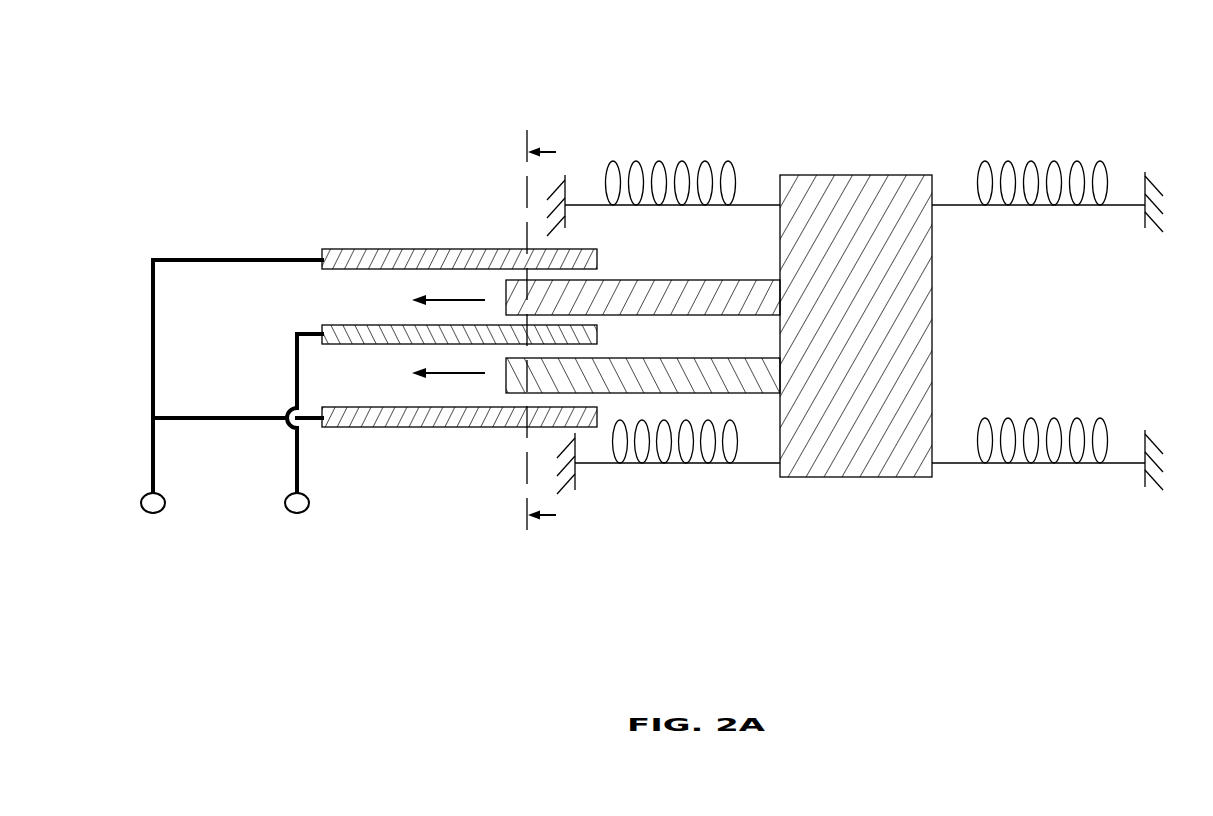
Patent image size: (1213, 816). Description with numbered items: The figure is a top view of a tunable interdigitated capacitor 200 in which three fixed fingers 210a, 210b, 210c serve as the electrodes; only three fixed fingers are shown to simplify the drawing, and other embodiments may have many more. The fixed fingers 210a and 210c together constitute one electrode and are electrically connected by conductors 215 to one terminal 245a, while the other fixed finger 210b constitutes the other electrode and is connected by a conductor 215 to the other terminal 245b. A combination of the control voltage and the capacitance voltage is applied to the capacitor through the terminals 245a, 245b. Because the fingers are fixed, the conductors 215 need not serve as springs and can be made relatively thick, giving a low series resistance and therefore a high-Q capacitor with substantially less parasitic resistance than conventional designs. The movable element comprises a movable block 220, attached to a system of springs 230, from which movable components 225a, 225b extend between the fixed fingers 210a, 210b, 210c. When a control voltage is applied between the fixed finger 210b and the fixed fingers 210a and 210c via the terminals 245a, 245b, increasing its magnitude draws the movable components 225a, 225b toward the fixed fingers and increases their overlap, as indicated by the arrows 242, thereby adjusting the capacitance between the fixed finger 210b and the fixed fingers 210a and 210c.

The tunable interdigitated capacitor 200 is at (717, 36).
The conductors 215 is at (213, 258).
The fixed finger 210a is at (392, 249).
The fixed finger 210b is at (358, 325).
The fixed finger 210c is at (393, 428).
The movable component 225a is at (705, 280).
The movable component 225b is at (705, 393).
The movable block 220 is at (848, 165).
The springs 230 is at (612, 165).
The arrows 242 is at (447, 299).
The terminal 245a is at (141, 503).
The terminal 245b is at (309, 501).